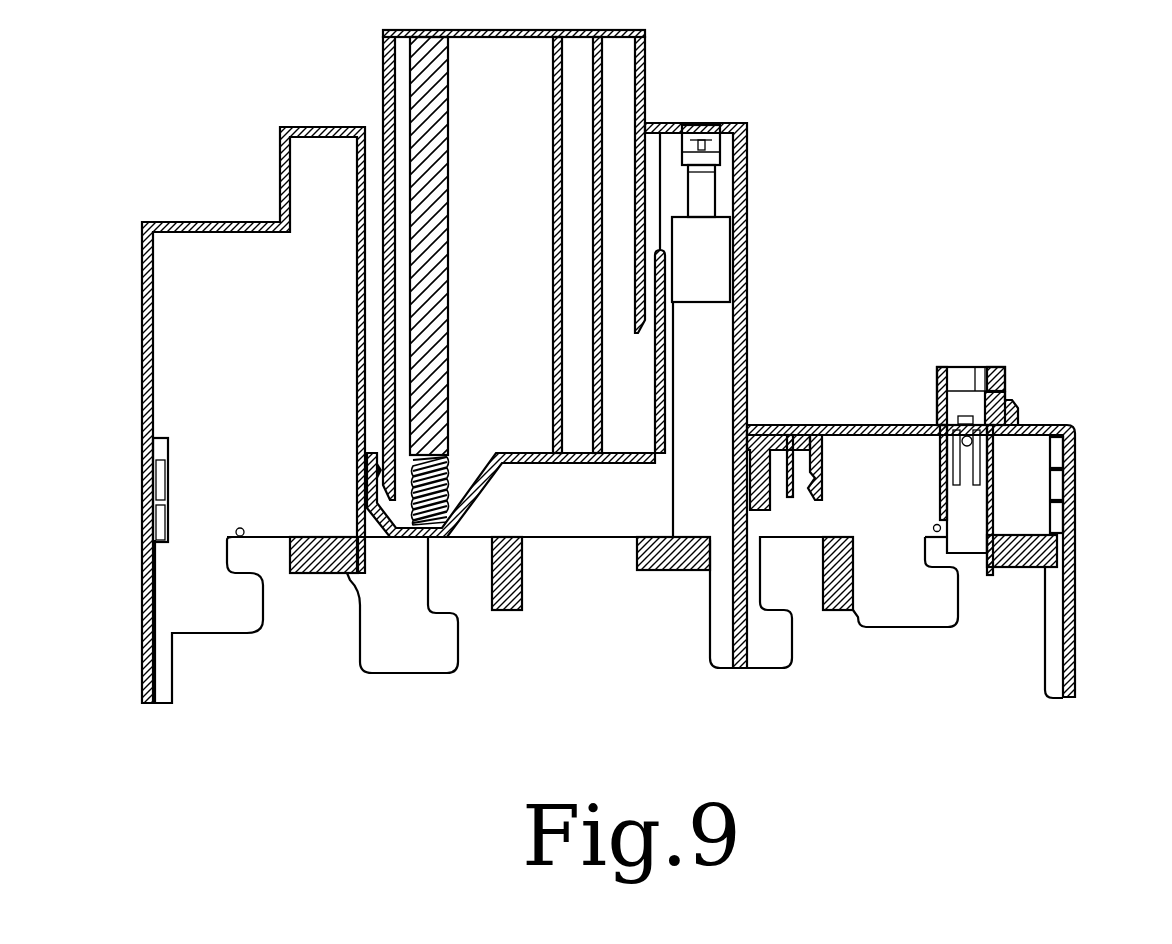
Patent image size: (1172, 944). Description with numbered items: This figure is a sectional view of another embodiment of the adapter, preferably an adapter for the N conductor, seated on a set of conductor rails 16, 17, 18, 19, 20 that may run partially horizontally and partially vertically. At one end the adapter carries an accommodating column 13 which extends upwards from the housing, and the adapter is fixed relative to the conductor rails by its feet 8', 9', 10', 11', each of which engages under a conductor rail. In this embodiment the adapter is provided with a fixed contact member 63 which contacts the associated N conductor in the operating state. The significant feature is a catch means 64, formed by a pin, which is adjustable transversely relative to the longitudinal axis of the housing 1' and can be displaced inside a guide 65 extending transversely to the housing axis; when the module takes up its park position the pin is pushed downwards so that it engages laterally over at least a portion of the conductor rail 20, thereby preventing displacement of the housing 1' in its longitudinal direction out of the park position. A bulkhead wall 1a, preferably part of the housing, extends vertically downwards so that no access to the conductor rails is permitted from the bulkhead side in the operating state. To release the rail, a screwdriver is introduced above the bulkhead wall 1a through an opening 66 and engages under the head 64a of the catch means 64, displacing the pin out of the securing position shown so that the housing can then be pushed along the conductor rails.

The accommodating column 13 is at (142, 272).
The housing 1' is at (815, 397).
The bulkhead wall 1a is at (1076, 605).
The head of the catch means 64a is at (958, 383).
The catch means 64 is at (1015, 405).
The opening 66 is at (1020, 477).
The guide 65 is at (943, 490).
The conductor rail 20 is at (1012, 567).
The foot 11' is at (910, 614).
The conductor rail 19 is at (838, 612).
The foot 10' is at (766, 644).
The conductor rail 18 is at (675, 572).
The conductor rail 17 is at (510, 612).
The fixed contact member 63 is at (483, 497).
The conductor rail 16 is at (322, 575).
The foot 9' is at (402, 642).
The foot 8' is at (222, 615).